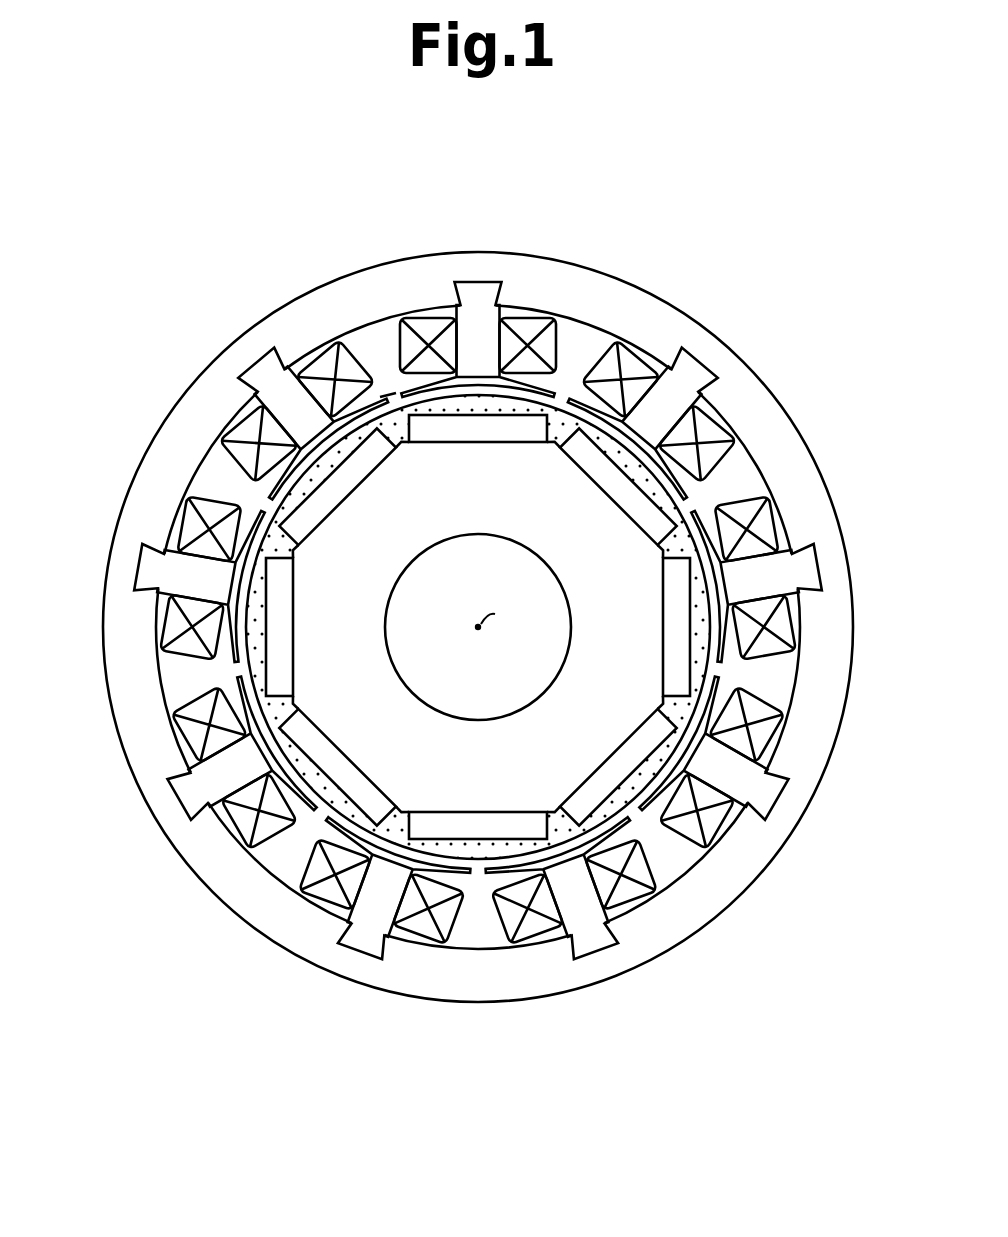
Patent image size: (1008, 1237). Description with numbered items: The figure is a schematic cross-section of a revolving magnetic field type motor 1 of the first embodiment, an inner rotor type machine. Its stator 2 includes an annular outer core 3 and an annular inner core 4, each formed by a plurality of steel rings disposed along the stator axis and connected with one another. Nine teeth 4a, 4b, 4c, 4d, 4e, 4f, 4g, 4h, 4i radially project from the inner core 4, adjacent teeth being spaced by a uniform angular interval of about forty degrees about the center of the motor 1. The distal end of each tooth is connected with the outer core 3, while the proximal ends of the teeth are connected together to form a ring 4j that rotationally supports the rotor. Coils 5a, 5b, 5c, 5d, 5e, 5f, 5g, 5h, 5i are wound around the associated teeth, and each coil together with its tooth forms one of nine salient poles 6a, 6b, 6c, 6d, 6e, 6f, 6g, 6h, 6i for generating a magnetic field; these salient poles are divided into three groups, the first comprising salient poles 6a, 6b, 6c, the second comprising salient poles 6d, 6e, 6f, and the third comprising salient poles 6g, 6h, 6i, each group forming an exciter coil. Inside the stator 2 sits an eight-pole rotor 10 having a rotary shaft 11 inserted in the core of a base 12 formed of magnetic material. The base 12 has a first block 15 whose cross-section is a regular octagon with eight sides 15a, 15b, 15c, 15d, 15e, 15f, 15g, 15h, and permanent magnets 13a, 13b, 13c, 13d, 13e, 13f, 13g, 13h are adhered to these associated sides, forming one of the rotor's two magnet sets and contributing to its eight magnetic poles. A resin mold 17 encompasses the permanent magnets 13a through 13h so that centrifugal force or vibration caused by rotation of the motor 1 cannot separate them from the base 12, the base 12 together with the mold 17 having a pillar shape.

The revolving magnetic field type motor 1 is at (737, 218).
The stator 2 is at (823, 378).
The annular outer core 3 is at (778, 414).
The annular inner core 4 is at (768, 486).
The tooth 4a is at (478, 284).
The tooth 4b is at (700, 362).
The tooth 4c is at (812, 566).
The tooth 4d is at (772, 797).
The tooth 4e is at (613, 947).
The tooth 4f is at (358, 943).
The tooth 4g is at (175, 813).
The tooth 4h is at (140, 565).
The tooth 4i is at (267, 348).
The ring 4j is at (388, 398).
The coil 5a is at (530, 335).
The coil 5b is at (713, 417).
The coil 5c is at (772, 537).
The coil 5d is at (723, 810).
The coil 5e is at (543, 930).
The coil 5f is at (325, 892).
The coil 5g is at (195, 742).
The coil 5h is at (187, 533).
The coil 5i is at (320, 363).
The salient pole 6a is at (577, 212).
The salient pole 6b is at (802, 336).
The salient pole 6c is at (872, 530).
The salient pole 6d is at (863, 848).
The salient pole 6e is at (560, 1040).
The salient pole 6f is at (358, 1040).
The salient pole 6g is at (107, 793).
The salient pole 6h is at (103, 418).
The salient pole 6i is at (267, 246).
The eight-pole rotor 10 is at (197, 452).
The rotary shaft 11 is at (482, 712).
The base 12 is at (300, 686).
The permanent magnet 13a is at (521, 445).
The permanent magnet 13b is at (592, 508).
The permanent magnet 13c is at (663, 652).
The permanent magnet 13d is at (600, 750).
The permanent magnet 13e is at (452, 812).
The permanent magnet 13f is at (340, 752).
The permanent magnet 13g is at (294, 597).
The permanent magnet 13h is at (362, 473).
The first block 15 is at (335, 815).
The side 15a is at (438, 450).
The side 15b is at (560, 450).
The side 15c is at (660, 555).
The side 15d is at (648, 710).
The side 15e is at (530, 810).
The side 15f is at (398, 805).
The side 15g is at (293, 662).
The side 15h is at (312, 523).
The resin mold 17 is at (478, 852).